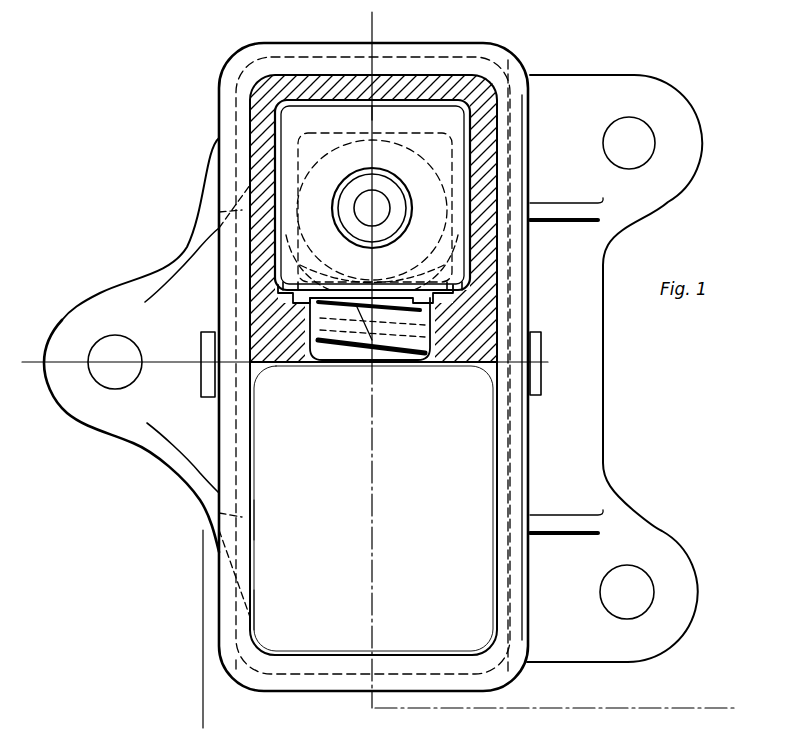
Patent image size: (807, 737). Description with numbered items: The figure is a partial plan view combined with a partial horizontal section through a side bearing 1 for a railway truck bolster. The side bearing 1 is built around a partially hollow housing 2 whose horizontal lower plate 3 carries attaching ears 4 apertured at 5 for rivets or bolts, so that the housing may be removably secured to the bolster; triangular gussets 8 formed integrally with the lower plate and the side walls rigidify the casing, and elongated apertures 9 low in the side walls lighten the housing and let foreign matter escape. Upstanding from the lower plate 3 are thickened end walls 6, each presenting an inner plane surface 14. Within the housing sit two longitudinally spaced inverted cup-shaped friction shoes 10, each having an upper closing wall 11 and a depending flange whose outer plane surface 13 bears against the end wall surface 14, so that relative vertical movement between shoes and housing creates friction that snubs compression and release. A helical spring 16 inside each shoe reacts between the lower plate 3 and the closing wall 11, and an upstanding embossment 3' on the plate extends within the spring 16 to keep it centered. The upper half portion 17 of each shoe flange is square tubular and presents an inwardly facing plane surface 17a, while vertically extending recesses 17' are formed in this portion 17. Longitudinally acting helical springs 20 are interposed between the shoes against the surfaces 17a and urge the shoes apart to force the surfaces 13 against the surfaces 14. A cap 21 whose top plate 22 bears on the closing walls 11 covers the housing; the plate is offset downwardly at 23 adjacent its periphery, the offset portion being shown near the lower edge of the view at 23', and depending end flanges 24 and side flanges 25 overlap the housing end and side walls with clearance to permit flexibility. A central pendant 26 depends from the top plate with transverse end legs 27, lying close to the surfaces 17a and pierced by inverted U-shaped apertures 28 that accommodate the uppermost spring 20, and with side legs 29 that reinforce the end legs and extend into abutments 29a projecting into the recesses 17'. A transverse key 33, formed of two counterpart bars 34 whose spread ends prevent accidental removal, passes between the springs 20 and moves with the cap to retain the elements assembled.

The side bearing 1 is at (668, 530).
The housing 2 is at (30, 336).
The lower plate 3 is at (241, 372).
The embossments 3' is at (381, 208).
The attaching ears 4 is at (56, 410).
The apertures 5 is at (371, 368).
The end walls 6 is at (407, 105).
The gussets 8 is at (190, 275).
The elongated apertures 9 is at (498, 146).
The friction shoes 10 is at (470, 125).
The closing wall 11 is at (372, 265).
The plane surface 13 is at (410, 113).
The plane surface 14 is at (320, 115).
The helical spring 16 is at (374, 207).
The upper half portion 17 is at (359, 298).
The plane surface 17a is at (370, 276).
The recesses 17' is at (372, 262).
The helical springs 20 is at (392, 353).
The cap 21 is at (296, 520).
The top plate 22 is at (288, 610).
The offset 23 is at (386, 384).
The housing shell flange 23' is at (274, 698).
The end flanges 24 is at (292, 45).
The side flanges 25 is at (219, 140).
The pendant 26 is at (433, 353).
The end legs 27 is at (373, 337).
The inverted U-shaped apertures 28 is at (293, 357).
The side legs 29 is at (290, 297).
The abutments 29a is at (376, 273).
The key 33 is at (200, 385).
The bars 34 is at (541, 377).